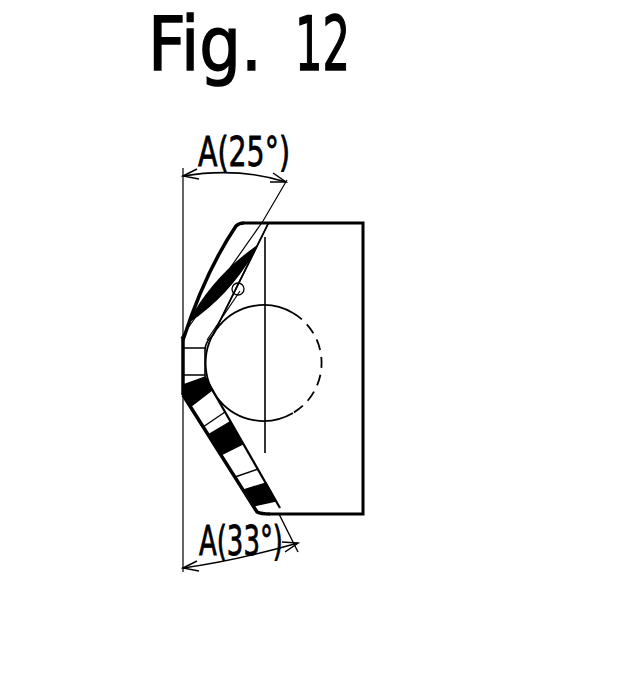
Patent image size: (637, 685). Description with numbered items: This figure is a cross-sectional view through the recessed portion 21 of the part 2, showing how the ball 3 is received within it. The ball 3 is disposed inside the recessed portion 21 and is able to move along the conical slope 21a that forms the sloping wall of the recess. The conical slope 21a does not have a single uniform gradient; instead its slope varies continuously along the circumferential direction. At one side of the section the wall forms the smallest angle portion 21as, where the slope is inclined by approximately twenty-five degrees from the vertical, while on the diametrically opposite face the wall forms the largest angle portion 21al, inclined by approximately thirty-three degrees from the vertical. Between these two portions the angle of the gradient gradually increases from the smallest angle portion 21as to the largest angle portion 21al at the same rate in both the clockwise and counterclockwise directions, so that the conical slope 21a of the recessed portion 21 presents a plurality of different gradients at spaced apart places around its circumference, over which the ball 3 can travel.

The tool body 2 is at (368, 455).
The recessed portion 21 is at (338, 260).
The conical slope 21a is at (234, 272).
The smallest angle portion 21as is at (277, 216).
The largest angle portion 21al is at (288, 517).
The ball 3 is at (322, 348).